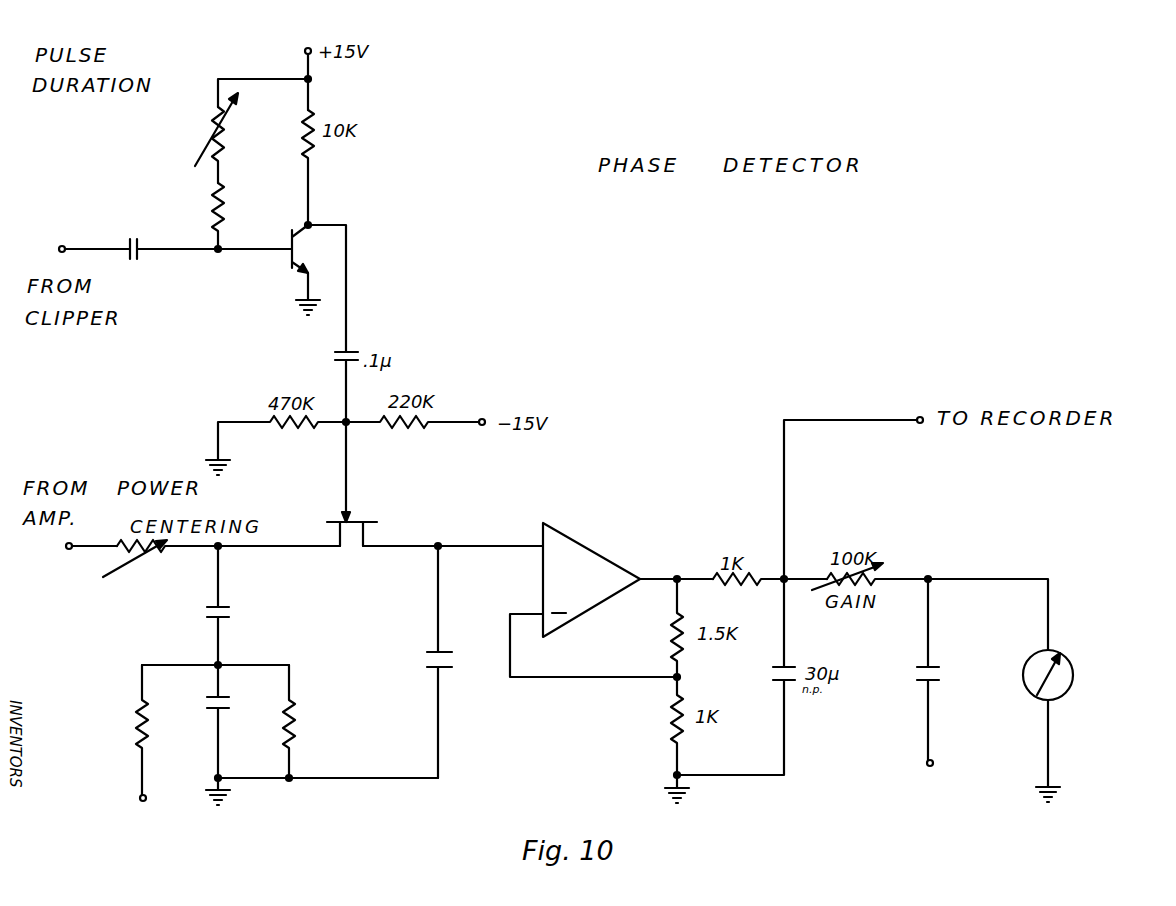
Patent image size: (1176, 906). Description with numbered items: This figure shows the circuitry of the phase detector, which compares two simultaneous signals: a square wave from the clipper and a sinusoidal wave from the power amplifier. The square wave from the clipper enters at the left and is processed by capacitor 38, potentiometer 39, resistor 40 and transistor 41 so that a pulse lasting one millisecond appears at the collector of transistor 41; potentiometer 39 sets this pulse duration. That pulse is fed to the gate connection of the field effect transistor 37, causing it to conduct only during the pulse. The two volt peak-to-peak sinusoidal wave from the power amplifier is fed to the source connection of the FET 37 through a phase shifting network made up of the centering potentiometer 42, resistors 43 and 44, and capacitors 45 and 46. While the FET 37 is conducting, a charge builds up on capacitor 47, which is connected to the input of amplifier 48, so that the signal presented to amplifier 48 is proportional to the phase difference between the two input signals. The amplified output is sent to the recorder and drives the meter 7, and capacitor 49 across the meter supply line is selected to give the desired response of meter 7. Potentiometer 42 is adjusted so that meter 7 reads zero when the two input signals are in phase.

The meter 7 is at (1076, 716).
The field effect transistor 37 is at (352, 497).
The capacitor 38 is at (142, 257).
The potentiometer 39 is at (206, 124).
The resistor 40 is at (212, 200).
The transistor 41 is at (308, 270).
The potentiometer 42 is at (217, 576).
The resistor 43 is at (147, 742).
The resistor 44 is at (303, 740).
The capacitor 45 is at (240, 618).
The capacitor 46 is at (228, 717).
The capacitor 47 is at (436, 662).
The amplifier 48 is at (593, 600).
The capacitor 49 is at (935, 690).